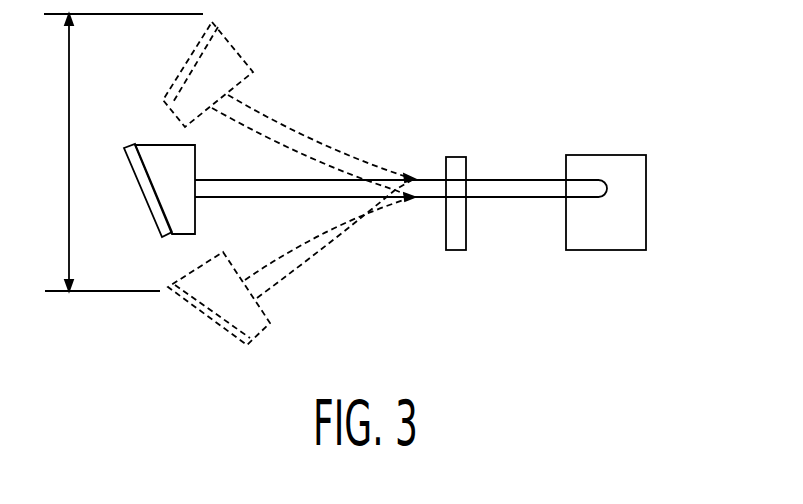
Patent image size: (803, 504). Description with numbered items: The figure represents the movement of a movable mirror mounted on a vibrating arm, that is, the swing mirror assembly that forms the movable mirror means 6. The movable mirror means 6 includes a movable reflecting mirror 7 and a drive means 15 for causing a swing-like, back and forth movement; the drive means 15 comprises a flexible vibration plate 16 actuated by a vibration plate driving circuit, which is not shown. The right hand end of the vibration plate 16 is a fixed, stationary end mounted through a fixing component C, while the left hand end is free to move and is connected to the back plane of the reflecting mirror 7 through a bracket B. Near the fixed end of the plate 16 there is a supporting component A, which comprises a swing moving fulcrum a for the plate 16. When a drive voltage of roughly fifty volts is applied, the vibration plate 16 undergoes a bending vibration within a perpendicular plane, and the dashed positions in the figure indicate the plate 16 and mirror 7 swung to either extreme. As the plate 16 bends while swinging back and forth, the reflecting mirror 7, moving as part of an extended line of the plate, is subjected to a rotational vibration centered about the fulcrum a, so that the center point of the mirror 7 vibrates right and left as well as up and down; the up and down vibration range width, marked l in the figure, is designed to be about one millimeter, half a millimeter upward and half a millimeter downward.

The drive means 15 is at (525, 178).
The flexible vibration plate 16 is at (268, 178).
The movable mirror means 6 is at (385, 232).
The movable reflecting mirror 7 is at (143, 197).
The supporting component A is at (448, 155).
The bracket B is at (153, 145).
The fixing component C is at (613, 165).
The swing moving fulcrum a is at (460, 190).
The length l is at (123, 152).